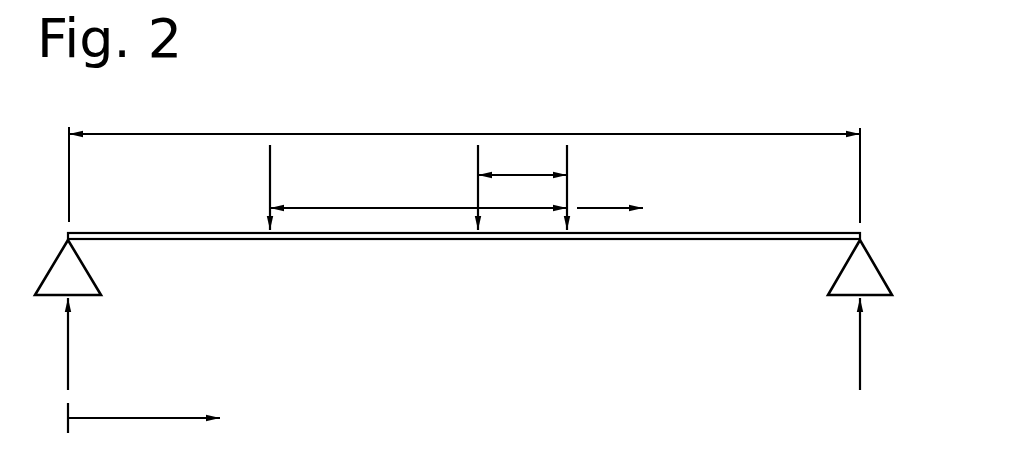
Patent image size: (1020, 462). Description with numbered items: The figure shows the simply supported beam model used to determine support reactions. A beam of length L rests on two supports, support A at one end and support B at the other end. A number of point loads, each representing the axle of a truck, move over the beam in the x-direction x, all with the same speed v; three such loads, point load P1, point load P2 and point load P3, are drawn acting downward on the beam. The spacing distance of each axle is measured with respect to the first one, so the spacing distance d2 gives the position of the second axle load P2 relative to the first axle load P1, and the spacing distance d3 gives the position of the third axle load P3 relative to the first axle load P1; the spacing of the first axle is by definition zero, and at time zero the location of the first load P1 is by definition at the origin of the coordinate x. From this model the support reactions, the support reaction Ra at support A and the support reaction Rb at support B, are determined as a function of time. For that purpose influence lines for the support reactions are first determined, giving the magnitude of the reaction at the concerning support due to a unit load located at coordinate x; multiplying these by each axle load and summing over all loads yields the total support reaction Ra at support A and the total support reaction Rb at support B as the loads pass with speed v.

The length L is at (464, 165).
The support A is at (68, 267).
The support B is at (860, 267).
The point load P1 is at (579, 185).
The point load P2 is at (489, 185).
The point load P3 is at (281, 185).
The spacing distance d2 is at (522, 161).
The spacing distance d3 is at (418, 197).
The speed v is at (610, 199).
The support reaction Ra is at (81, 344).
The support reaction Rb is at (874, 344).
The x-direction x is at (144, 414).